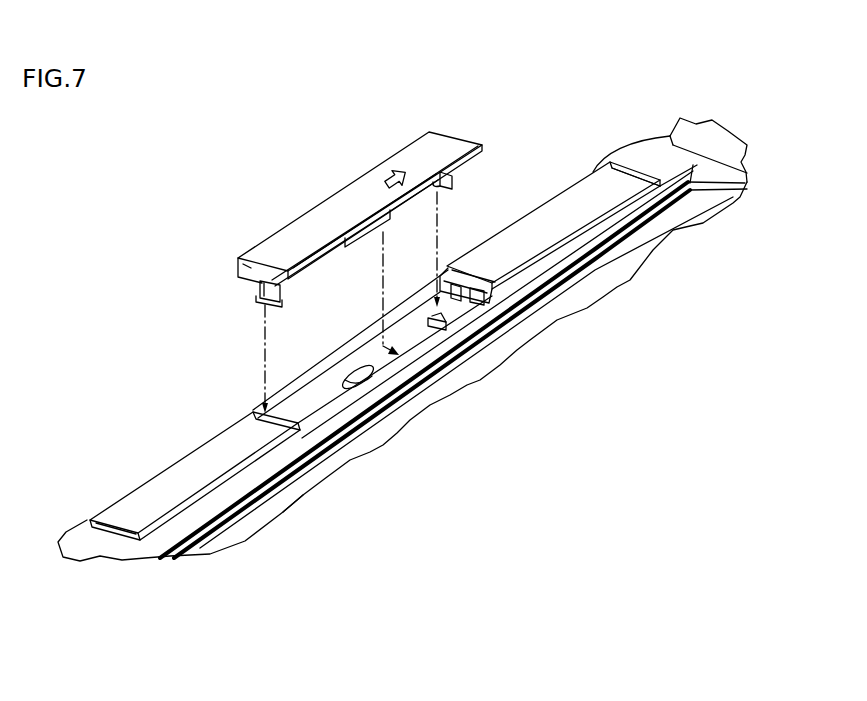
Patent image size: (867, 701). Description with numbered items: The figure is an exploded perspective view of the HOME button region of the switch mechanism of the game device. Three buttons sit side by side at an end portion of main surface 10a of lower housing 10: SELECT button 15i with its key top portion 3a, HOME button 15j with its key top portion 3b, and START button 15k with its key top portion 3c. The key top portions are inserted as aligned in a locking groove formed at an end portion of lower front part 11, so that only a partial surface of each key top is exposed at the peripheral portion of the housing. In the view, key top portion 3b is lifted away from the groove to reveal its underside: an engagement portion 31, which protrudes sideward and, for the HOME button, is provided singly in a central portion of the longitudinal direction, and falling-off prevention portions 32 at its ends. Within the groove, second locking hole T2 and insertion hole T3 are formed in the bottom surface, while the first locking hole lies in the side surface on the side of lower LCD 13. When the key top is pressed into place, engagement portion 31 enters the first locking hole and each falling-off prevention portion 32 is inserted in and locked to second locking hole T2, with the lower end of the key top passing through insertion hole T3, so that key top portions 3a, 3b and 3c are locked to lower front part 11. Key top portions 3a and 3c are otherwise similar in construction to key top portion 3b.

The key top portion 3a is at (550, 221).
The key top portion 3b is at (356, 215).
The key top portion 3c is at (195, 462).
The lower housing 10 is at (712, 172).
The main surface 10a is at (641, 158).
The lower front part 11 is at (674, 157).
The lower LCD 13 is at (661, 234).
The SELECT button 15i is at (500, 254).
The HOME button 15j is at (289, 246).
The START button 15k is at (133, 508).
The engagement portion 31 is at (360, 230).
The falling-off prevention portion 32 is at (262, 295).
The second locking hole T2 is at (437, 320).
The insertion hole T3 is at (360, 371).